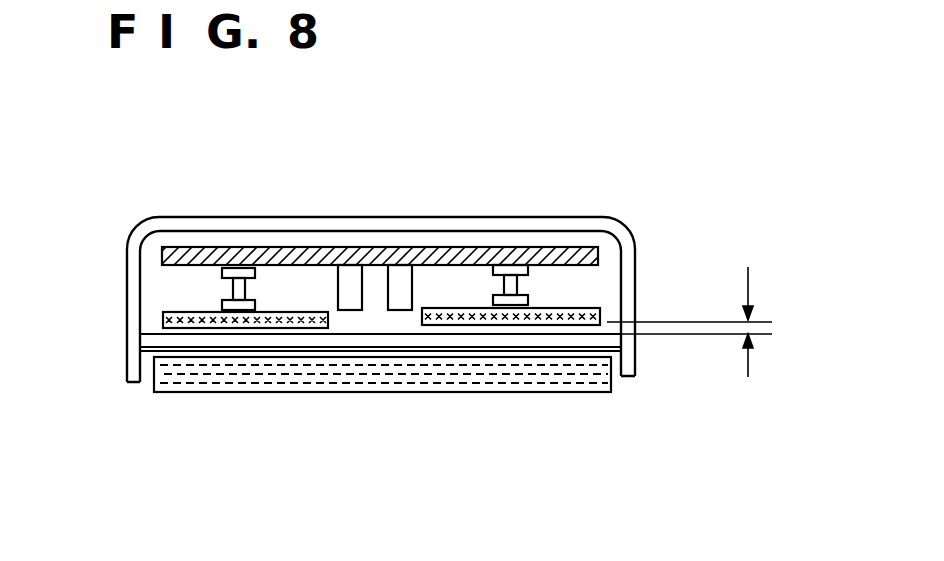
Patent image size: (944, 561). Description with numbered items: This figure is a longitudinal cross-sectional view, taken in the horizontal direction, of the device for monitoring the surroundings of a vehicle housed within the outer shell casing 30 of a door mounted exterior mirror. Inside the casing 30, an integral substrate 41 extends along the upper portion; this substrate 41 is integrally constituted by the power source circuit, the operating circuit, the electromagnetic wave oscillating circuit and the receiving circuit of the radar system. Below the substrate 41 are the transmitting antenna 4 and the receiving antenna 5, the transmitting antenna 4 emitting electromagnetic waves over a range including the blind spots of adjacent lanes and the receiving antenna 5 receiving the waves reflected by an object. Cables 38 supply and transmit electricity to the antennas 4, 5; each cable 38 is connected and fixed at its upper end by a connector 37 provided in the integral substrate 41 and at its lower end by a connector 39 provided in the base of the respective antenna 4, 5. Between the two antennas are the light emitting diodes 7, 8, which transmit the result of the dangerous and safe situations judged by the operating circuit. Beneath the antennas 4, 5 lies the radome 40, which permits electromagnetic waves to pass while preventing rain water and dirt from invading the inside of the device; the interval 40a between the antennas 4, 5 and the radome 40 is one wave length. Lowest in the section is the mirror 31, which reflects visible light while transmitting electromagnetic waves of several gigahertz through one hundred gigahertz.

The door mounted exterior mirror outer shell casing 30 is at (192, 218).
The integral substrate 41 is at (162, 258).
The connectors 37 is at (220, 277).
The cables 38 is at (233, 288).
The connectors 39 is at (220, 307).
The light emitting diode 8 is at (348, 310).
The light emitting diode 7 is at (400, 310).
The receiving antenna 5 is at (233, 328).
The transmitting antenna 4 is at (520, 325).
The radome 40 is at (382, 352).
The interval 40a is at (708, 335).
The mirror 31 is at (611, 367).